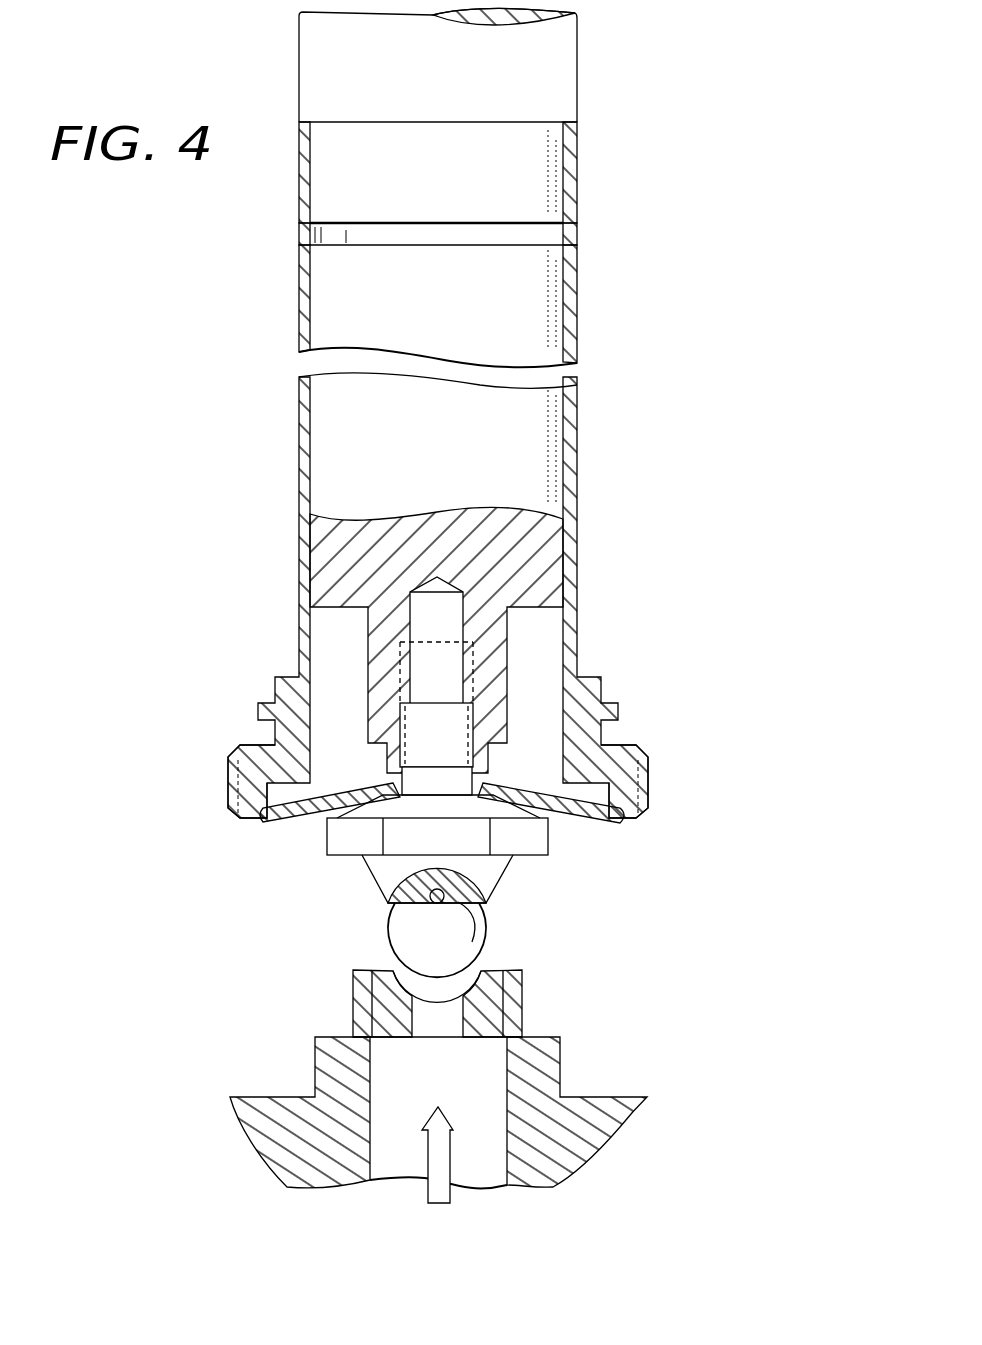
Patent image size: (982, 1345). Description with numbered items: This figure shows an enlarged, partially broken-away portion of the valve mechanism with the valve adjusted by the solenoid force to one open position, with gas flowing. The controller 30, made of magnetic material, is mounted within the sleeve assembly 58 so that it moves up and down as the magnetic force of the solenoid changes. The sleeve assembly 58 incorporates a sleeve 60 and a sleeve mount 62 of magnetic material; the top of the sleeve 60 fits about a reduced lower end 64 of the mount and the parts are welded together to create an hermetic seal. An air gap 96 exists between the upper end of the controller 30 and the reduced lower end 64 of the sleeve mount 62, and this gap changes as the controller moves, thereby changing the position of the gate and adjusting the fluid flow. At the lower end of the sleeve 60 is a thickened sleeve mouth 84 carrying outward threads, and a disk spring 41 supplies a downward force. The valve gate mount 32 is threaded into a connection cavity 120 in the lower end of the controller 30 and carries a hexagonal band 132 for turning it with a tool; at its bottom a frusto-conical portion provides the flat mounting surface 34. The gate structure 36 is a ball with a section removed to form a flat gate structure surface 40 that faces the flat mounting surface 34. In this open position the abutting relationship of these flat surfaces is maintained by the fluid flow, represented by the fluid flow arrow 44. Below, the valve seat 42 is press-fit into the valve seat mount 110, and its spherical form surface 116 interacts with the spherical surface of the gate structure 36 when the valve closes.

The sleeve mount 62 is at (297, 60).
The reduced lower end 64 is at (541, 185).
The air gap 96 is at (340, 235).
The controller 30 is at (542, 302).
The sleeve assembly 58 is at (300, 404).
The sleeve 60 is at (577, 440).
The connection cavity 120 is at (440, 600).
The sleeve mouth 84 is at (648, 778).
The disk spring 41 is at (290, 822).
The hexagonal band 132 is at (330, 853).
The valve gate mount 32 is at (550, 838).
The flat gate structure surface 40 is at (465, 895).
The gate structure 36 is at (407, 930).
The flat mounting surface 34 is at (473, 922).
The spherical form surface 116 is at (410, 970).
The valve seat 42 is at (500, 970).
The valve seat mount 110 is at (603, 1112).
The fluid flow arrow 44 is at (427, 1192).